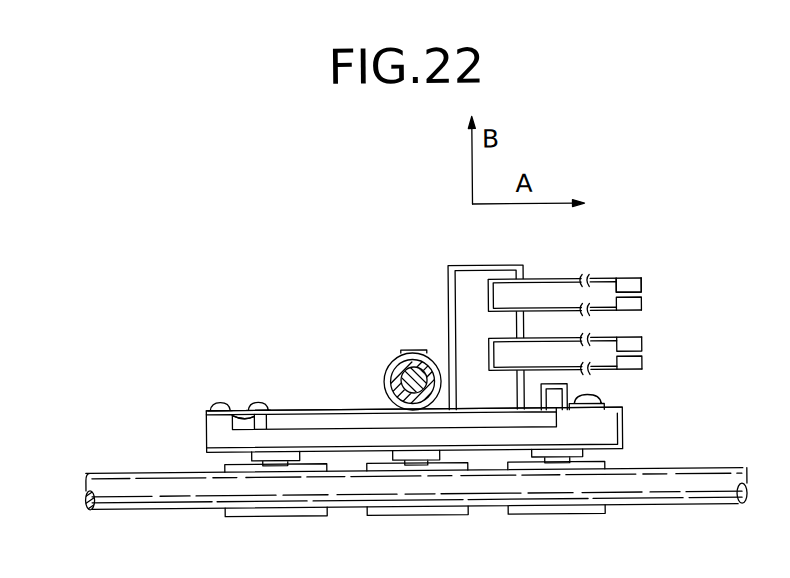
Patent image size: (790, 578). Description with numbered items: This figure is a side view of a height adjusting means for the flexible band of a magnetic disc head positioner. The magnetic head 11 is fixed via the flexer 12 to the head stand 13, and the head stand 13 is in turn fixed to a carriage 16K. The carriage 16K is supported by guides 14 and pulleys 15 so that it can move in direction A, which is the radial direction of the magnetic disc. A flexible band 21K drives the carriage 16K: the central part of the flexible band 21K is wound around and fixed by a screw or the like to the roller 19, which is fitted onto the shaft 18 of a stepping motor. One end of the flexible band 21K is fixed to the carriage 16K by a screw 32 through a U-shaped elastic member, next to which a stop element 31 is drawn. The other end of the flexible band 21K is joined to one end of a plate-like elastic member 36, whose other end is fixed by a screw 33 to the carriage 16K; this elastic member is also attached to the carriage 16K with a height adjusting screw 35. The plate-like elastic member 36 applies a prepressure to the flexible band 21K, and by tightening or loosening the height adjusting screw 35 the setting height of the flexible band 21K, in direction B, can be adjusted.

The magnetic head 11 is at (646, 281).
The flexer 12 is at (572, 280).
The head stand 13 is at (468, 283).
The guides 14 is at (148, 482).
The pulleys 15 is at (272, 511).
The carriage 16K is at (213, 431).
The shaft 18 is at (393, 383).
The roller 19 is at (393, 362).
The flexible band 21K is at (298, 408).
The stopper 31 is at (568, 386).
The screw 32 is at (603, 405).
The screw 33 is at (215, 404).
The height adjusting screw 35 is at (254, 402).
The plate-like elastic member 36 is at (245, 409).